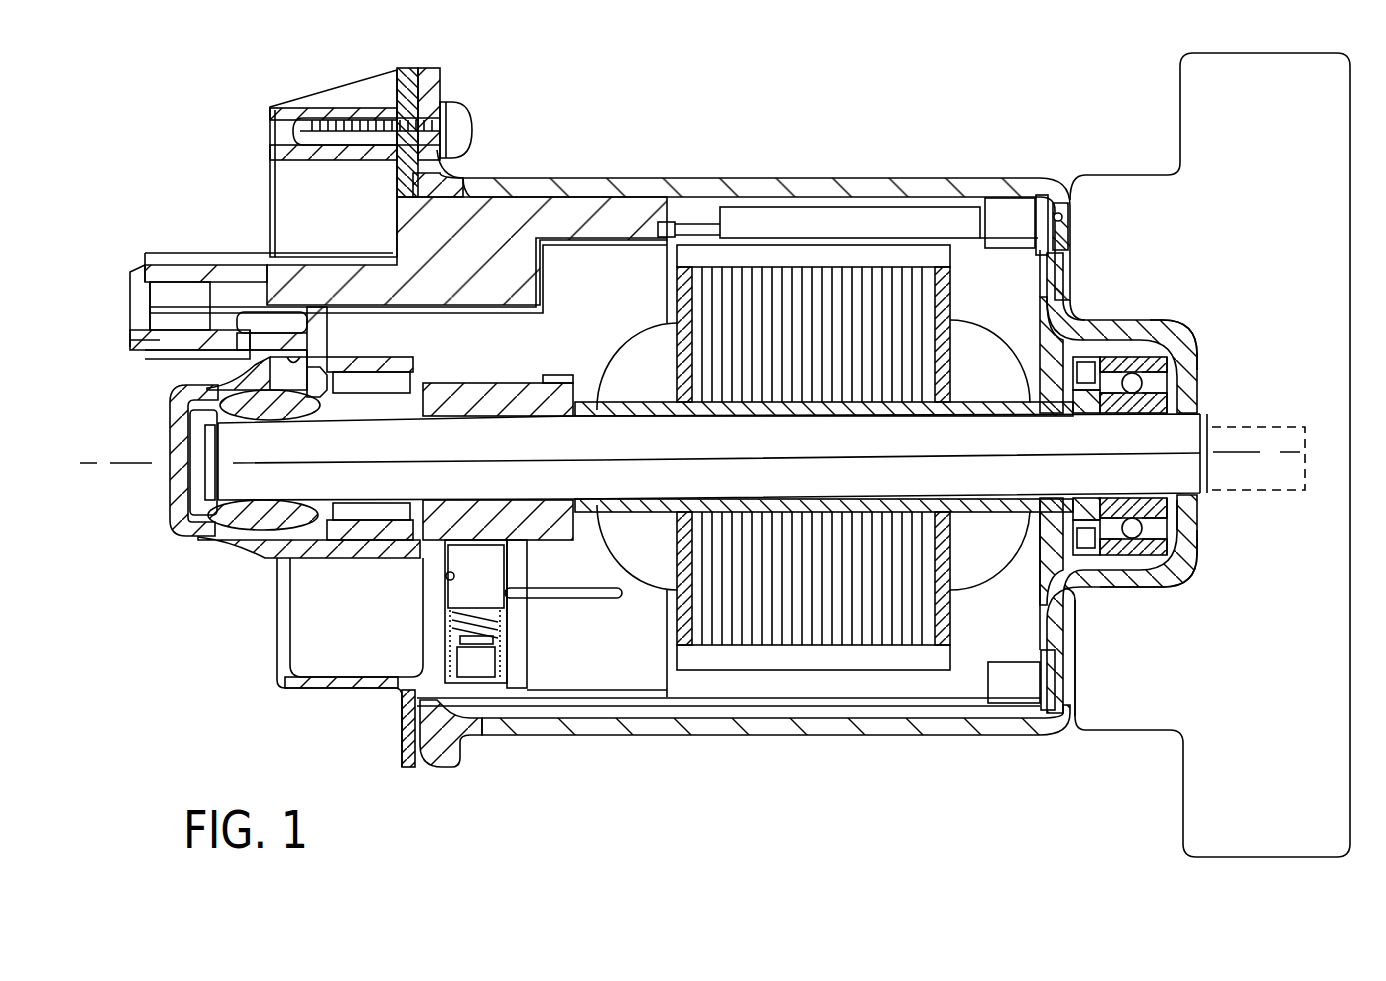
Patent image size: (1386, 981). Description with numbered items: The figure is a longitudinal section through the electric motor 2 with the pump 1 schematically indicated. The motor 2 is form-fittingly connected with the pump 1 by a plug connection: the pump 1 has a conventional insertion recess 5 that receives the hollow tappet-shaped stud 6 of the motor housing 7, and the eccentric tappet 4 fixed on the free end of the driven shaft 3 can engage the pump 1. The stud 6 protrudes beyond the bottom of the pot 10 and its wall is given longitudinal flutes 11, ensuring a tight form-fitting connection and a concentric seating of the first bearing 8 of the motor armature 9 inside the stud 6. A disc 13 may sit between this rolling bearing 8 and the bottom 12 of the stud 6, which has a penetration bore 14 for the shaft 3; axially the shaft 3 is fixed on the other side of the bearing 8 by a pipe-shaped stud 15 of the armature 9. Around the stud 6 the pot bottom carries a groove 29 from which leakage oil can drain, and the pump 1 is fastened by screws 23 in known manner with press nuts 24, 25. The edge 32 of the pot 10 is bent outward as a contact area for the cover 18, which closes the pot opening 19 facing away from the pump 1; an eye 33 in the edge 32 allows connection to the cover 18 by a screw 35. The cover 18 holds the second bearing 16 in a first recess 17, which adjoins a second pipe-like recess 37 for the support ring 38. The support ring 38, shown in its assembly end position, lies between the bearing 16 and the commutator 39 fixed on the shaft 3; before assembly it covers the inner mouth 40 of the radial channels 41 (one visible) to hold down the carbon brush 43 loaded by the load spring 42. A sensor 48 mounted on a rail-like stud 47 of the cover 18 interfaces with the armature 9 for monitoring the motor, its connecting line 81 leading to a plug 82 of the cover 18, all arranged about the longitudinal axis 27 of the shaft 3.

The pump 1 is at (1342, 202).
The electric motor 2 is at (774, 409).
The driven shaft 3 is at (725, 442).
The eccentric tappet 4 is at (1300, 477).
The insertion recess 5 is at (1153, 583).
The hollow tappet-shaped stud 6 is at (1132, 483).
The motor housing 7 is at (678, 177).
The first bearing 8 is at (1180, 578).
The motor armature 9 is at (950, 311).
The pot 10 is at (1077, 657).
The longitudinal flutes 11 is at (1167, 328).
The bottom of the pot-shaped stud 12 is at (1187, 465).
The disc 13 is at (1188, 547).
The penetration bore 14 is at (1188, 508).
The pipe-shaped stud 15 is at (985, 507).
The second bearing 16 is at (247, 550).
The first recess 17 is at (188, 388).
The cover 18 is at (345, 702).
The pot opening 19 is at (393, 717).
The screws 23 is at (1067, 215).
The press nut 24 is at (1000, 213).
The press nut 25 is at (1018, 692).
The longitudinal axis 27 is at (293, 463).
The groove 29 is at (1078, 610).
The edge of the pot 32 is at (447, 750).
The eye 33 is at (430, 85).
The screw 35 is at (468, 118).
The second pipe-like recess 37 is at (300, 363).
The support ring 38 is at (410, 380).
The commutator 39 is at (530, 380).
The inner mouth 40 is at (533, 533).
The radial channel 41 is at (446, 577).
The load spring 42 is at (477, 637).
The carbon brush 43 is at (480, 614).
The rail-like stud 47 is at (618, 202).
The sensor 48 is at (813, 198).
The connecting line 81 is at (543, 273).
The plug 82 is at (160, 340).